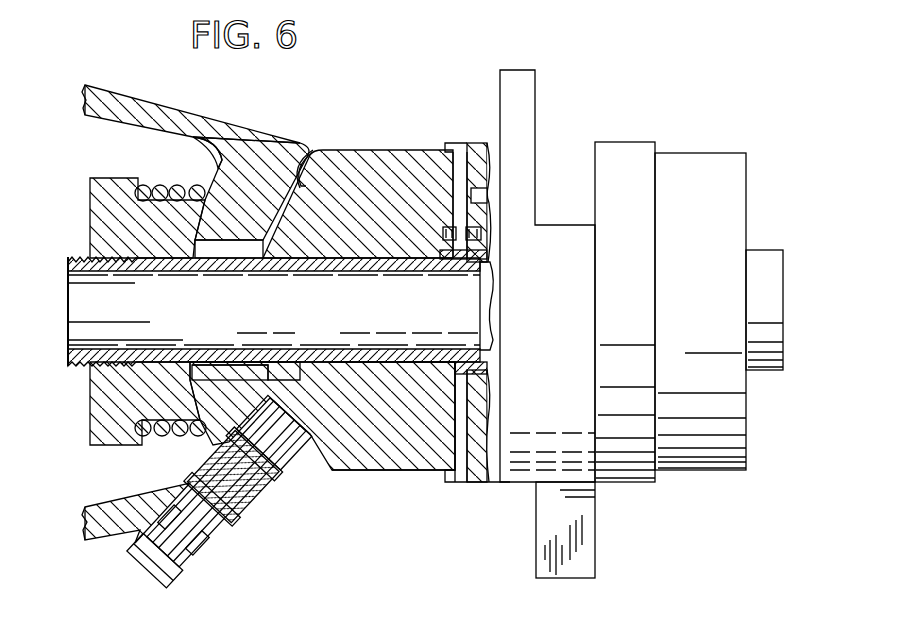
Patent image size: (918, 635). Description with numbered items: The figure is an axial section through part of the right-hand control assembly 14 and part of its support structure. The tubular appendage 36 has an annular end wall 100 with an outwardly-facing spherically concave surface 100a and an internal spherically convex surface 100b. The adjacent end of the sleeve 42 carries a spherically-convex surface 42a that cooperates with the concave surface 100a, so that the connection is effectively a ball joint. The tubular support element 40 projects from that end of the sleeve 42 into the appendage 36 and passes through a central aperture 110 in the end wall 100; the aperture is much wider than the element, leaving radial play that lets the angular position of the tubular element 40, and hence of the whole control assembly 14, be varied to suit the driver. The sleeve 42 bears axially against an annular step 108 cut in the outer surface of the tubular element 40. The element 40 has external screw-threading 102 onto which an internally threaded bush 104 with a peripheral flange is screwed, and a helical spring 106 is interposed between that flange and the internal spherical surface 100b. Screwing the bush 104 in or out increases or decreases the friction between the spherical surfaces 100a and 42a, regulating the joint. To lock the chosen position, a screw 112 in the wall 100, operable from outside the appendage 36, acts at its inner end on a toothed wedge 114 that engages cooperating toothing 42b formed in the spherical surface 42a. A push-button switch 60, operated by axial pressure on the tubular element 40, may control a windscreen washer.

The control assembly 14 is at (622, 486).
The tubular appendage 36 is at (113, 108).
The tubular support element 40 is at (357, 435).
The sleeve 42 is at (377, 362).
The spherically-convex surface 42a is at (303, 178).
The toothing 42b is at (248, 365).
The push-button switch 60 is at (760, 310).
The annular end wall 100 is at (278, 157).
The spherically concave surface 100a is at (300, 187).
The spherically convex surface 100b is at (207, 163).
The external screw-threading 102 is at (140, 268).
The screw-threaded bush 104 is at (153, 385).
The helical spring 106 is at (180, 437).
The annular step 108 is at (467, 280).
The central aperture 110 is at (236, 262).
The screw 112 is at (248, 500).
The toothed wedge 114 is at (302, 366).